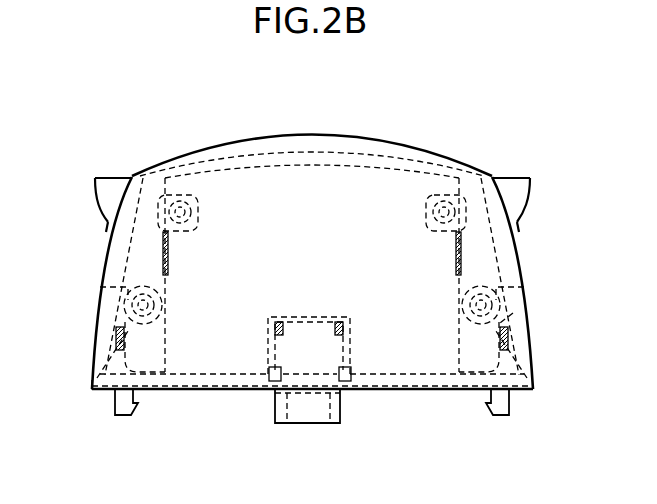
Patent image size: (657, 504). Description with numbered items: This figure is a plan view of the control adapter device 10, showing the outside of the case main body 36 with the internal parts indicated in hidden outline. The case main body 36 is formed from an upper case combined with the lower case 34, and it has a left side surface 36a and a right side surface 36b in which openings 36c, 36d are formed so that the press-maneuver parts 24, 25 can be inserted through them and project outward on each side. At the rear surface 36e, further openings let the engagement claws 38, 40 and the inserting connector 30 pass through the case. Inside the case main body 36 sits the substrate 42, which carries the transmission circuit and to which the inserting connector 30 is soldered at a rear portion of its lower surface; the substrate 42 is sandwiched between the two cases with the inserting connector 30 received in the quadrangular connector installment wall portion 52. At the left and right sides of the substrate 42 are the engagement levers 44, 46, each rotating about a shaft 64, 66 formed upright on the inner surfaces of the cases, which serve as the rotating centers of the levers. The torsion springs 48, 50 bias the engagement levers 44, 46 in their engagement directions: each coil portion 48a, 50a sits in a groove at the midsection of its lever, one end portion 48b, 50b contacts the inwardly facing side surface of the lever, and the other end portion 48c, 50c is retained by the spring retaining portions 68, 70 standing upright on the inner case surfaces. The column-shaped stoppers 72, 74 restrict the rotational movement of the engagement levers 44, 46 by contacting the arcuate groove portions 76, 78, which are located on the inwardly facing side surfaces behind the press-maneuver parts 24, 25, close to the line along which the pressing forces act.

The control adapter device 10 is at (403, 103).
The press-maneuver part 24 is at (102, 178).
The press-maneuver part 25 is at (532, 182).
The inserting connector 30 is at (310, 424).
The lower case 34 is at (268, 173).
The case main body 36 is at (465, 152).
The left side surface 36a is at (100, 302).
The right side surface 36b is at (531, 297).
The opening 36c is at (118, 176).
The opening 36d is at (507, 176).
The rear surface 36e is at (389, 392).
The engagement claw 38 is at (123, 416).
The engagement claw 40 is at (500, 416).
The substrate 42 is at (325, 179).
The engagement lever 44 is at (102, 220).
The engagement lever 46 is at (527, 215).
The torsion spring 48 is at (172, 282).
The coil portion 48a is at (118, 283).
The one end portion 48b is at (169, 233).
The other end portion 48c is at (110, 346).
The torsion spring 50 is at (460, 292).
The coil portion 50a is at (527, 290).
The one end portion 50b is at (456, 233).
The other end portion 50c is at (466, 342).
The connector installment wall portion 52 is at (352, 340).
The shaft 64 is at (162, 303).
The shaft 66 is at (462, 313).
The spring retaining portion 68 is at (90, 389).
The spring retaining portion 70 is at (531, 349).
The stopper 72 is at (191, 200).
The stopper 74 is at (433, 208).
The arcuate groove portion 76 is at (177, 172).
The arcuate groove portion 78 is at (447, 172).